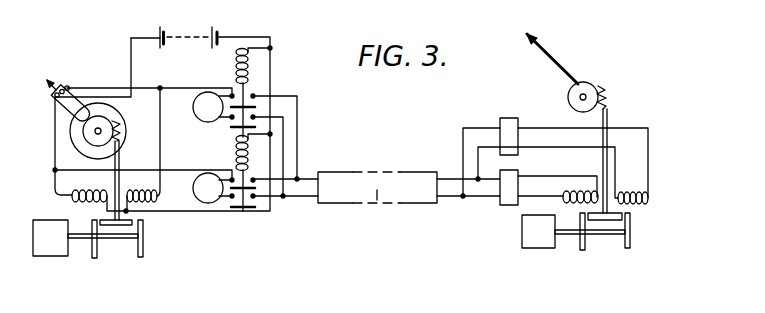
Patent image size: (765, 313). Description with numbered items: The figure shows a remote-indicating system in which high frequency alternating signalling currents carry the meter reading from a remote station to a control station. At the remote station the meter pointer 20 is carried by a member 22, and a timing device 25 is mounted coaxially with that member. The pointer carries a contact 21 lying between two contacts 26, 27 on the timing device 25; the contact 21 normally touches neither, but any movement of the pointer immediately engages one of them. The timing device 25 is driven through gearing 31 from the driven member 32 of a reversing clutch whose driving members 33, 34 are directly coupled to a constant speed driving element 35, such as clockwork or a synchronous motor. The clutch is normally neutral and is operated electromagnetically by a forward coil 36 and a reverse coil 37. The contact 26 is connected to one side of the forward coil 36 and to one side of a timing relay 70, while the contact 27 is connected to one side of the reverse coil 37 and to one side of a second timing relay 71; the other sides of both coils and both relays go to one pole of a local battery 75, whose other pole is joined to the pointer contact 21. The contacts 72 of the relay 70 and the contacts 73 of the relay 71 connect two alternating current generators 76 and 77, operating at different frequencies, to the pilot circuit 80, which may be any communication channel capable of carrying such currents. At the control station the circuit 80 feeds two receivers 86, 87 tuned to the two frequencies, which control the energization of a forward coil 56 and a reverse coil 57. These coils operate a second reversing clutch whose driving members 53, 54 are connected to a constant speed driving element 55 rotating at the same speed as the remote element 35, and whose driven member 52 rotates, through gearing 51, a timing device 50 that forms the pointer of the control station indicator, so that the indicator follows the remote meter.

The meter pointer 20 is at (47, 77).
The contact 21 is at (61, 88).
The member carrying the meter pointer 22 is at (110, 106).
The timing device 25 is at (86, 123).
The contact 26 is at (69, 85).
The contact 27 is at (55, 98).
The gearing 31 is at (120, 133).
The driven member of reversing clutch 32 is at (122, 226).
The driving member of reversing clutch 33 is at (144, 247).
The driving member of reversing clutch 34 is at (95, 258).
The constant speed driving element 35 is at (57, 256).
The forward coil 36 is at (150, 203).
The reverse coil 37 is at (72, 197).
The timing device 50 is at (554, 58).
The gearing 51 is at (610, 95).
The driven member of reversing clutch 52 is at (601, 221).
The driving member of reversing clutch 53 is at (630, 243).
The driving member of reversing clutch 54 is at (583, 251).
The constant speed driving element 55 is at (537, 248).
The forward coil 56 is at (639, 204).
The reverse coil 57 is at (562, 200).
The timing relay 70 is at (249, 65).
The second timing relay 71 is at (236, 152).
The relay contacts 72 is at (255, 106).
The relay contacts 73 is at (253, 209).
The local battery 75 is at (197, 33).
The A. C. generator 76 is at (205, 119).
The A. C. generator 77 is at (207, 204).
The pilot circuit 80 is at (377, 204).
The receiver 86 is at (506, 118).
The receiver 87 is at (503, 203).